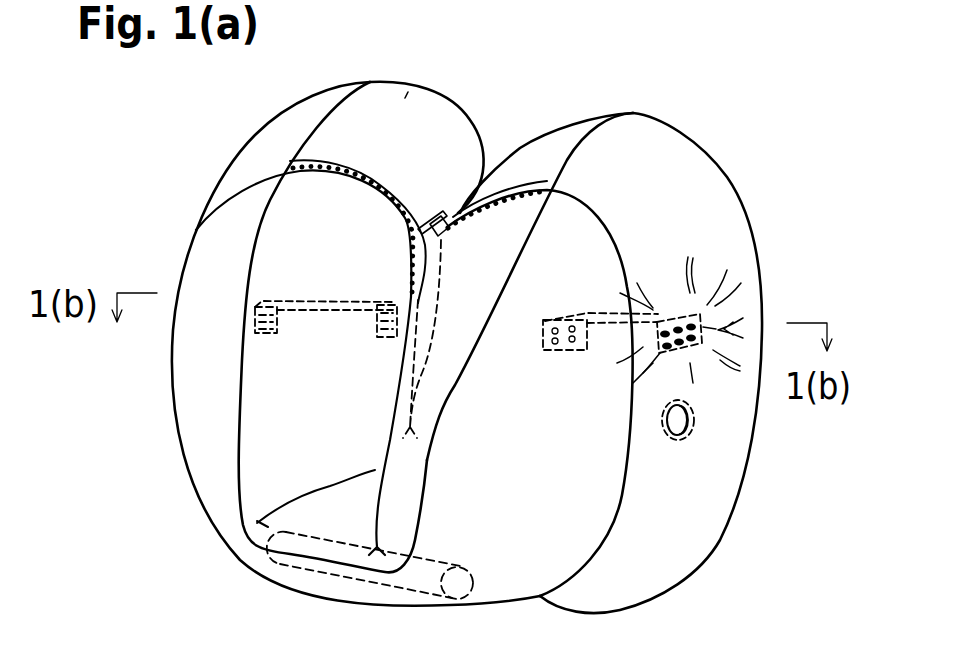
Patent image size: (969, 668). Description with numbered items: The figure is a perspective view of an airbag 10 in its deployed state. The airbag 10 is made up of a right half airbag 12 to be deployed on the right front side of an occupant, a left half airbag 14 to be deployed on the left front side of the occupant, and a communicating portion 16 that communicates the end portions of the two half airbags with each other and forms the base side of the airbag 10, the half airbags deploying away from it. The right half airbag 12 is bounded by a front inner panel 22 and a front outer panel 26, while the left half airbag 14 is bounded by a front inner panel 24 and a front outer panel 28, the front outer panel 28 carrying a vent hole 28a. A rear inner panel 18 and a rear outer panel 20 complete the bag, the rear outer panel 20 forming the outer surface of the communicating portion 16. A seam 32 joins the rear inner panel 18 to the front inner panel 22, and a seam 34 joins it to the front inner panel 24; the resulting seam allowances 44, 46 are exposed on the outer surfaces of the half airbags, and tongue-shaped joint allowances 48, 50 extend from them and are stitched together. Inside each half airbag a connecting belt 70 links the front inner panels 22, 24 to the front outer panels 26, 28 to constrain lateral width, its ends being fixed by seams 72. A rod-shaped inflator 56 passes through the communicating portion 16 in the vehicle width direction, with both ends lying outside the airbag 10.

The airbag 10 is at (170, 526).
The right half airbag 12 is at (467, 87).
The left half airbag 14 is at (713, 125).
The communicating portion 16 is at (338, 525).
The rear inner panel 18 is at (300, 453).
The rear outer panel 20 is at (194, 450).
The front inner panel 22 is at (407, 100).
The front inner panel 24 is at (597, 123).
The front outer panel 26 is at (252, 147).
The front outer panel 28 is at (750, 300).
The vent hole 28a is at (668, 440).
The seam 32 is at (378, 198).
The seam 34 is at (517, 192).
The seam allowance 44 is at (362, 170).
The seam allowance 46 is at (530, 186).
The tongue-shaped joint allowance 48 is at (433, 217).
The tongue-shaped joint allowance 50 is at (444, 213).
The inflator 56 is at (428, 575).
The connecting belt 70 is at (307, 312).
The seam 72 is at (677, 326).